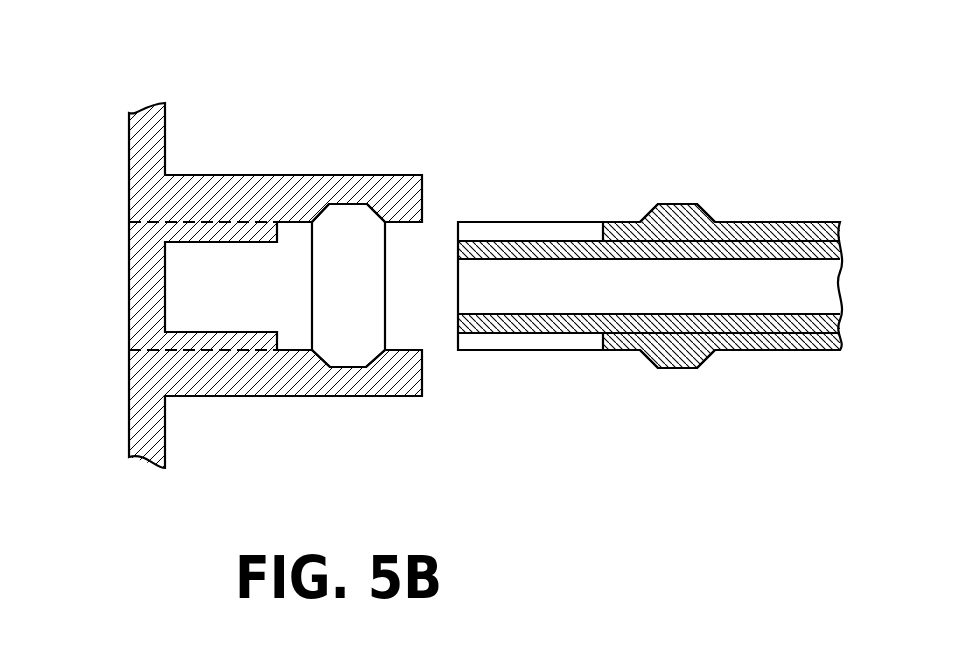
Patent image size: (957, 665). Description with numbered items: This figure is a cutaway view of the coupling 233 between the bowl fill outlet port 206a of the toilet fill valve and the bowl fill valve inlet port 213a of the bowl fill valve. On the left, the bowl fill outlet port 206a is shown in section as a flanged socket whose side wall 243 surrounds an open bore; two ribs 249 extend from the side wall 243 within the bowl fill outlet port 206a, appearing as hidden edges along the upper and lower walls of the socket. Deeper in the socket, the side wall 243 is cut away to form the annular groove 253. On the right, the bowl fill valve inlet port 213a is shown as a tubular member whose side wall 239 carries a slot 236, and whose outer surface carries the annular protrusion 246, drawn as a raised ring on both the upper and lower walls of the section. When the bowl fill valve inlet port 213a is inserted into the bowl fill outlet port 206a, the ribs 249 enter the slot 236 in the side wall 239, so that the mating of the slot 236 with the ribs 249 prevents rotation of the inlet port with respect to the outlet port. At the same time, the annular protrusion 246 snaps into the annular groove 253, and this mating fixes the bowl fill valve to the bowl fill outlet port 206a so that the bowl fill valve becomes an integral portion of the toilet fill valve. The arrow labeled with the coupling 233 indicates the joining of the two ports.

The bowl fill outlet port 206a is at (254, 114).
The side wall 243 is at (262, 272).
The ribs 249 is at (190, 341).
The annular groove 253 is at (345, 359).
The bowl fill valve inlet port 213a is at (654, 131).
The slot 236 is at (522, 235).
The side wall 239 is at (621, 352).
The annular protrusion 246 is at (674, 370).
The coupling 233 is at (643, 553).